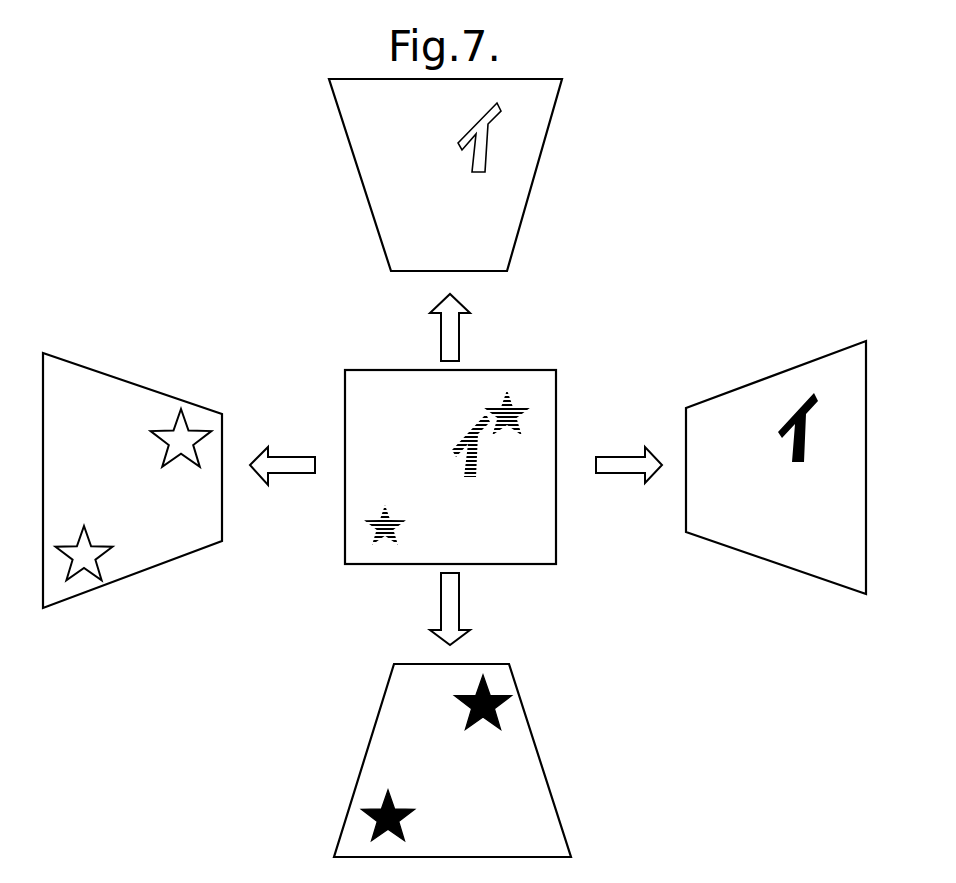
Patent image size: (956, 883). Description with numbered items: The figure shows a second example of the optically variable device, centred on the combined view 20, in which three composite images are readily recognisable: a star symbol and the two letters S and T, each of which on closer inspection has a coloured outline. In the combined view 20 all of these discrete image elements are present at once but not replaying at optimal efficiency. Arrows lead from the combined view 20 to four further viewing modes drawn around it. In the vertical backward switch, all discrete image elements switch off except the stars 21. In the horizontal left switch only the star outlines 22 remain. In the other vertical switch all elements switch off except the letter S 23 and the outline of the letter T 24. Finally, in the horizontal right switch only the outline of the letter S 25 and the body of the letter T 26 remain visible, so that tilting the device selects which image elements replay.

The combined view 20 is at (556, 397).
The stars 21 is at (390, 805).
The star outlines 22 is at (187, 466).
The letter "S" 23 is at (428, 180).
The outline of the letter "T" 24 is at (490, 145).
The outline of the letter "S" 25 is at (745, 502).
The body of the letter "T" 26 is at (807, 430).